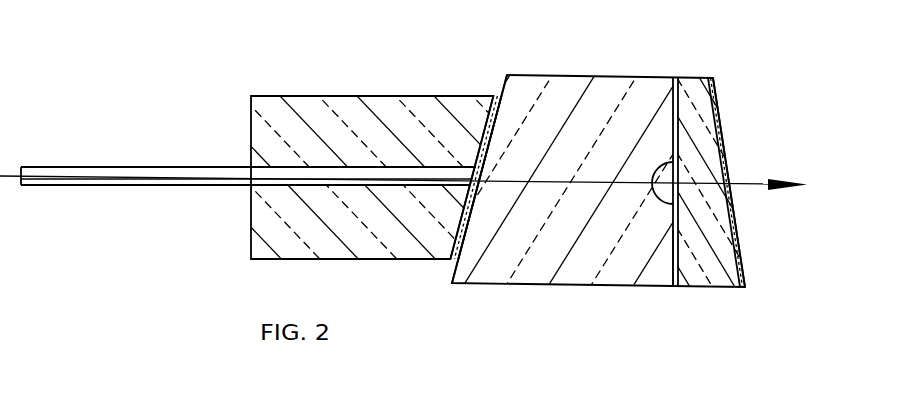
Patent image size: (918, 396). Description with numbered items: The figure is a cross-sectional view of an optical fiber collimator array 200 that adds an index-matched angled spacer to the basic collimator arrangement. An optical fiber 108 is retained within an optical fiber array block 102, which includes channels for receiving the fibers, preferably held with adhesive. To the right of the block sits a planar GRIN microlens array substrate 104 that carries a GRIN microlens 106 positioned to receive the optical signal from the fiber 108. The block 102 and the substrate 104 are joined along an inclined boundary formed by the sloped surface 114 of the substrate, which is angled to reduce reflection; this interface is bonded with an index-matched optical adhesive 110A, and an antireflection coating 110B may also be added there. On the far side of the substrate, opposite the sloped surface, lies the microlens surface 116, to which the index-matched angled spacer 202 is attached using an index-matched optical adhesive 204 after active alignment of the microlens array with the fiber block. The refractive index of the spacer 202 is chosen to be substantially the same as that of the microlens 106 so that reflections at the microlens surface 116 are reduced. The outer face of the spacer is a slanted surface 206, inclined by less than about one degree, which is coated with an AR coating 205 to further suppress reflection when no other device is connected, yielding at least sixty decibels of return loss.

The optical fiber collimator array 200 is at (180, 106).
The optical fiber array block 102 is at (337, 95).
The GRIN microlens array substrate 104 is at (510, 284).
The GRIN microlens 106 is at (644, 195).
The optical fiber 108 is at (127, 188).
The index-matched optical adhesive 110A is at (490, 97).
The antireflection coating 110B is at (502, 99).
The sloped surface 114 is at (451, 272).
The microlens surface 116 is at (660, 258).
The index-matched angled spacer 202 is at (700, 78).
The index-matched optical adhesive 204 is at (672, 97).
The AR coating 205 is at (741, 255).
The slanted surface 206 is at (734, 106).